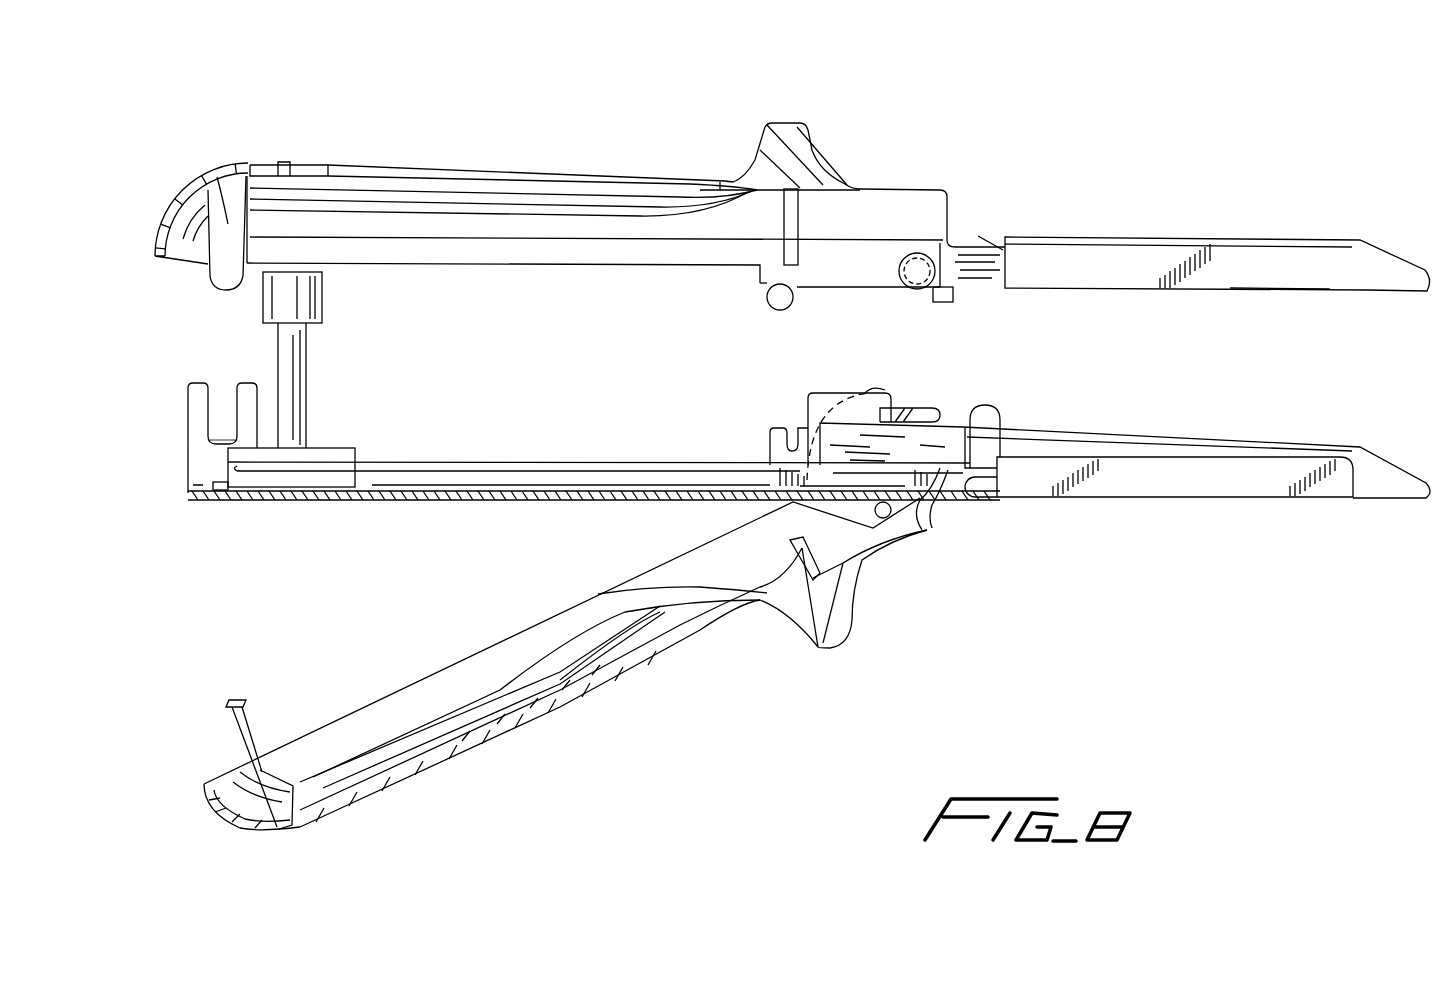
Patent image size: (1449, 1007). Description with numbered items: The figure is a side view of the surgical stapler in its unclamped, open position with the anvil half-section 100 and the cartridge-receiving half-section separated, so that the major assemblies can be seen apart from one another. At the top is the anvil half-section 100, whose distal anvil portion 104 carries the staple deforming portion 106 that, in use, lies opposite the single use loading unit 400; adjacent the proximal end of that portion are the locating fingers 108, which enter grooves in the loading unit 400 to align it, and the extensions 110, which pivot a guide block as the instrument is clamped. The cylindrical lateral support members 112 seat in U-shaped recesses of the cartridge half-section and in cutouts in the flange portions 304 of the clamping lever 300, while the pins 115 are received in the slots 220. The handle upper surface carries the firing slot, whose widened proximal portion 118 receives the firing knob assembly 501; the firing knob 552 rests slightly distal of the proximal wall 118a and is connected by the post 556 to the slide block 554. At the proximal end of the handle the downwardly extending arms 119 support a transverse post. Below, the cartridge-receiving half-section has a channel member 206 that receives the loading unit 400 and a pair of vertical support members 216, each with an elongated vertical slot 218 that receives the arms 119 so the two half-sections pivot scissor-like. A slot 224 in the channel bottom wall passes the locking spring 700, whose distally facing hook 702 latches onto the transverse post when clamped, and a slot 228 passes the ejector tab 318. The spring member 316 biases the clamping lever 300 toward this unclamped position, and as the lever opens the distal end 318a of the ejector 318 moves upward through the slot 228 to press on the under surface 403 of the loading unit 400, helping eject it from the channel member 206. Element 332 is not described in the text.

The anvil half-section 100 is at (965, 130).
The anvil portion 104 is at (1290, 258).
The staple deforming portion 106 is at (1224, 292).
The locating fingers 108 is at (945, 302).
The extensions 110 is at (768, 292).
The lateral support members 112 is at (912, 283).
The pins 115 is at (790, 305).
The widened proximal portion 118 is at (310, 165).
The proximal wall 118a is at (285, 162).
The arms 119 is at (210, 178).
The channel member 206 is at (1167, 483).
The vertical support members 216 is at (197, 395).
The vertical slot 218 is at (228, 385).
The slots 220 is at (795, 425).
The slot 224 is at (222, 490).
The slot 228 is at (940, 502).
The clamping lever 300 is at (258, 630).
The flange portions 304 is at (855, 405).
The spring member 316 is at (540, 690).
The ejector tab 318 is at (930, 527).
The distal end of ejector 318a is at (962, 499).
The grip portion 332 is at (630, 625).
The single use loading unit 400 is at (1160, 440).
The under surface of the SULU 403 is at (963, 440).
The firing knob assembly 501 is at (385, 360).
The firing knob 552 is at (305, 295).
The slide block 554 is at (295, 485).
The post 556 is at (298, 383).
The locking spring 700 is at (240, 732).
The hook 702 is at (214, 677).